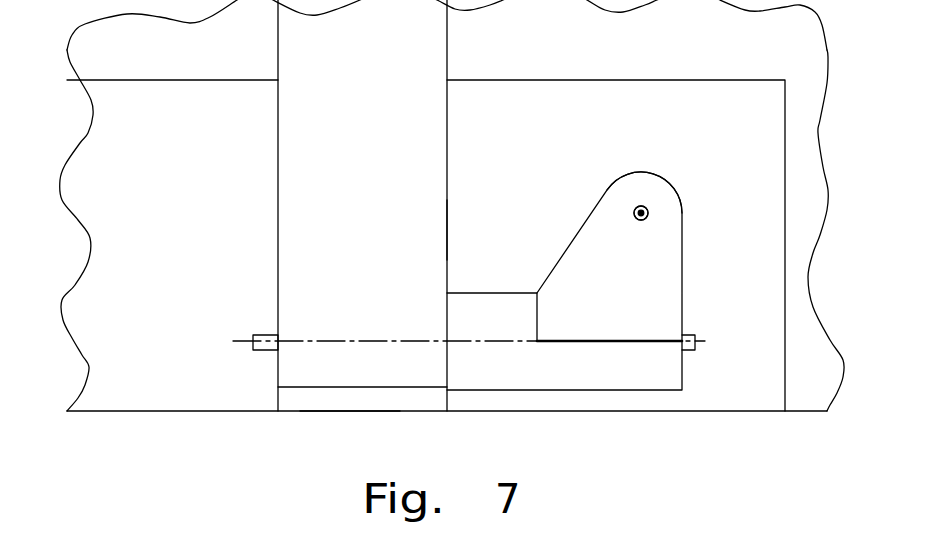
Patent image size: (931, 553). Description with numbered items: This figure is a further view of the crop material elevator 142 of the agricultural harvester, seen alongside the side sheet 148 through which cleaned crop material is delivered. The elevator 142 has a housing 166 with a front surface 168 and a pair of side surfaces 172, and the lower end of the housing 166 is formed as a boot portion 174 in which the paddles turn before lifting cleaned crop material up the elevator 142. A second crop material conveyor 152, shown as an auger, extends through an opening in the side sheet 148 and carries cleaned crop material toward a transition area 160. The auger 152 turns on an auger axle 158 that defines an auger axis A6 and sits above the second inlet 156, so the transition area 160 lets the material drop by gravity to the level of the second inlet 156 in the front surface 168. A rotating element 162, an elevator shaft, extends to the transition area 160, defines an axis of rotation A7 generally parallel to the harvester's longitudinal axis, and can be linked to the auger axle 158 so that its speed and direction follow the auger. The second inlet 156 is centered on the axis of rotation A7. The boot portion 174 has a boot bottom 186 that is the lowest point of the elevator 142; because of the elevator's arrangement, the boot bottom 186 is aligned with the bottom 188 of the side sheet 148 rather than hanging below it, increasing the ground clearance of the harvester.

The crop material elevator 142 is at (307, 413).
The side sheet 148 is at (761, 117).
The second crop material conveyor 152 is at (719, 179).
The second inlet 156 is at (447, 318).
The auger axle 158 is at (641, 222).
The transition area 160 is at (682, 285).
The rotating element 162 is at (689, 351).
The housing 166 is at (433, 352).
The front surface 168 is at (447, 232).
The side surfaces 172 is at (374, 172).
The boot portion 174 is at (417, 398).
The boot bottom 186 is at (349, 413).
The bottom of the side sheet 188 is at (188, 412).
The auger axis A6 is at (648, 213).
The axis of rotation A7 is at (736, 343).